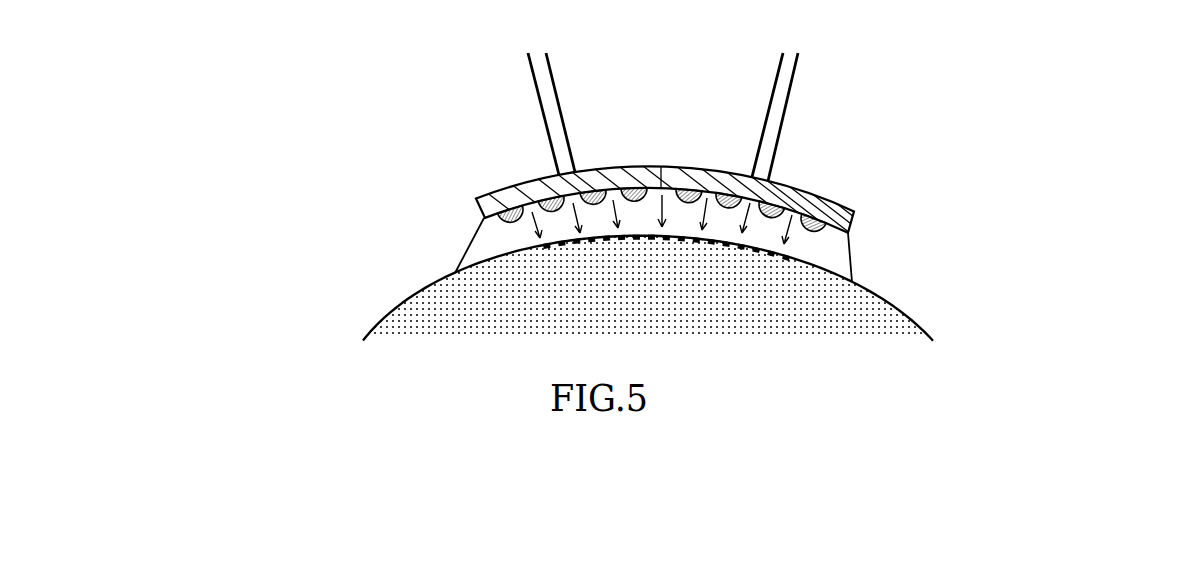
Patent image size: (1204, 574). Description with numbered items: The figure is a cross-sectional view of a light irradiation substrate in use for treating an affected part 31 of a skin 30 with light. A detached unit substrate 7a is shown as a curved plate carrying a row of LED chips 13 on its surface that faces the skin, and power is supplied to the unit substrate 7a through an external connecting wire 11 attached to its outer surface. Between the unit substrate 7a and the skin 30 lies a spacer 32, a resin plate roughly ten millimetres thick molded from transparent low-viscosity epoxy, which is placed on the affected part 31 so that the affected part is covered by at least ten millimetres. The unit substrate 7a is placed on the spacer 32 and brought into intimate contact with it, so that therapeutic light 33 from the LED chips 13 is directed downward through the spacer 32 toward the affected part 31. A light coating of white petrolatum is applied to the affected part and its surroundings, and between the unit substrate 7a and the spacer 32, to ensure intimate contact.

The external connecting wire 11 is at (786, 99).
The unit substrate 7a is at (820, 193).
The LED chip 13 is at (815, 222).
The spacer 32 is at (482, 216).
The therapeutic light 33 is at (537, 224).
The affected part 31 is at (577, 246).
The skin 30 is at (392, 321).